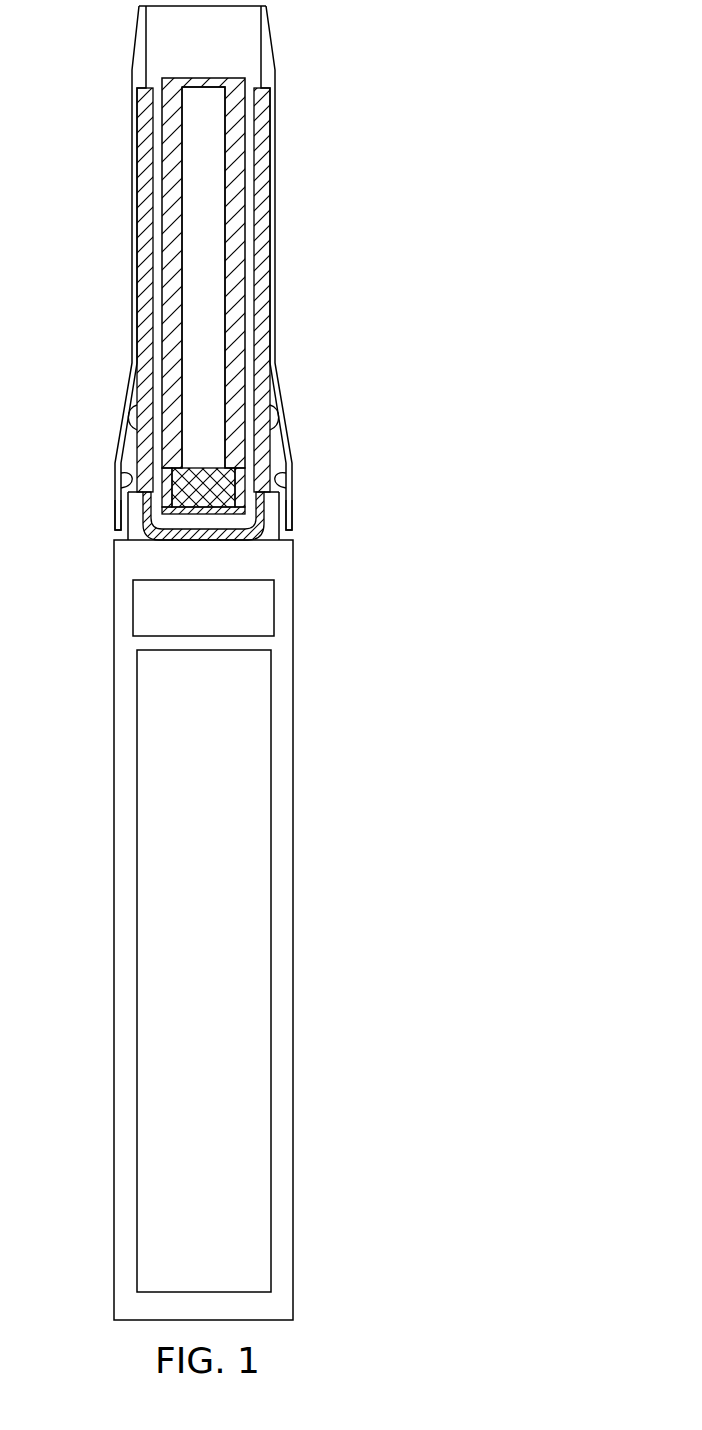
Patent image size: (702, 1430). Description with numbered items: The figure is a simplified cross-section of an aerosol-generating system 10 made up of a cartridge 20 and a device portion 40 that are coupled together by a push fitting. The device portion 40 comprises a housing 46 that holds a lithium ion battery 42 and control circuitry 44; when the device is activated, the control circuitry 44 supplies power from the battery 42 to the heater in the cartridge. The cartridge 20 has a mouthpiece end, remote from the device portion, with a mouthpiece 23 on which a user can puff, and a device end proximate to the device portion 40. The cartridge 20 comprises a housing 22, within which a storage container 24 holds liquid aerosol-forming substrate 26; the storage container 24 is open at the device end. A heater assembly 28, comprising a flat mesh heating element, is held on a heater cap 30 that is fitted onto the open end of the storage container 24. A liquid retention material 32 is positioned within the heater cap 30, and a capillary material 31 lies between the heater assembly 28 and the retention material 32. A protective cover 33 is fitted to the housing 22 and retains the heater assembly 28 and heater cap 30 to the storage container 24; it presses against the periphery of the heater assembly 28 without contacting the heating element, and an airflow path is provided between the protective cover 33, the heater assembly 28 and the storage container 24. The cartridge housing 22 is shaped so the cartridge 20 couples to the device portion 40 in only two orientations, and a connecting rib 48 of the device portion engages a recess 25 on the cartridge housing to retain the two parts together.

The aerosol-generating system 10 is at (318, 619).
The cartridge 20 is at (291, 239).
The housing 22 is at (289, 436).
The mouthpiece 23 is at (286, 27).
The storage container 24 is at (238, 155).
The recess 25 is at (292, 520).
The liquid aerosol-forming substrate 26 is at (205, 340).
The heater assembly 28 is at (165, 492).
The heater cap 30 is at (153, 500).
The capillary material 31 is at (222, 483).
The liquid retention material 32 is at (235, 498).
The protective cover 33 is at (136, 419).
The device portion 40 is at (318, 1059).
The lithium ion battery 42 is at (250, 845).
The control circuitry 44 is at (148, 611).
The housing 46 is at (293, 692).
The connecting rib 48 is at (281, 495).